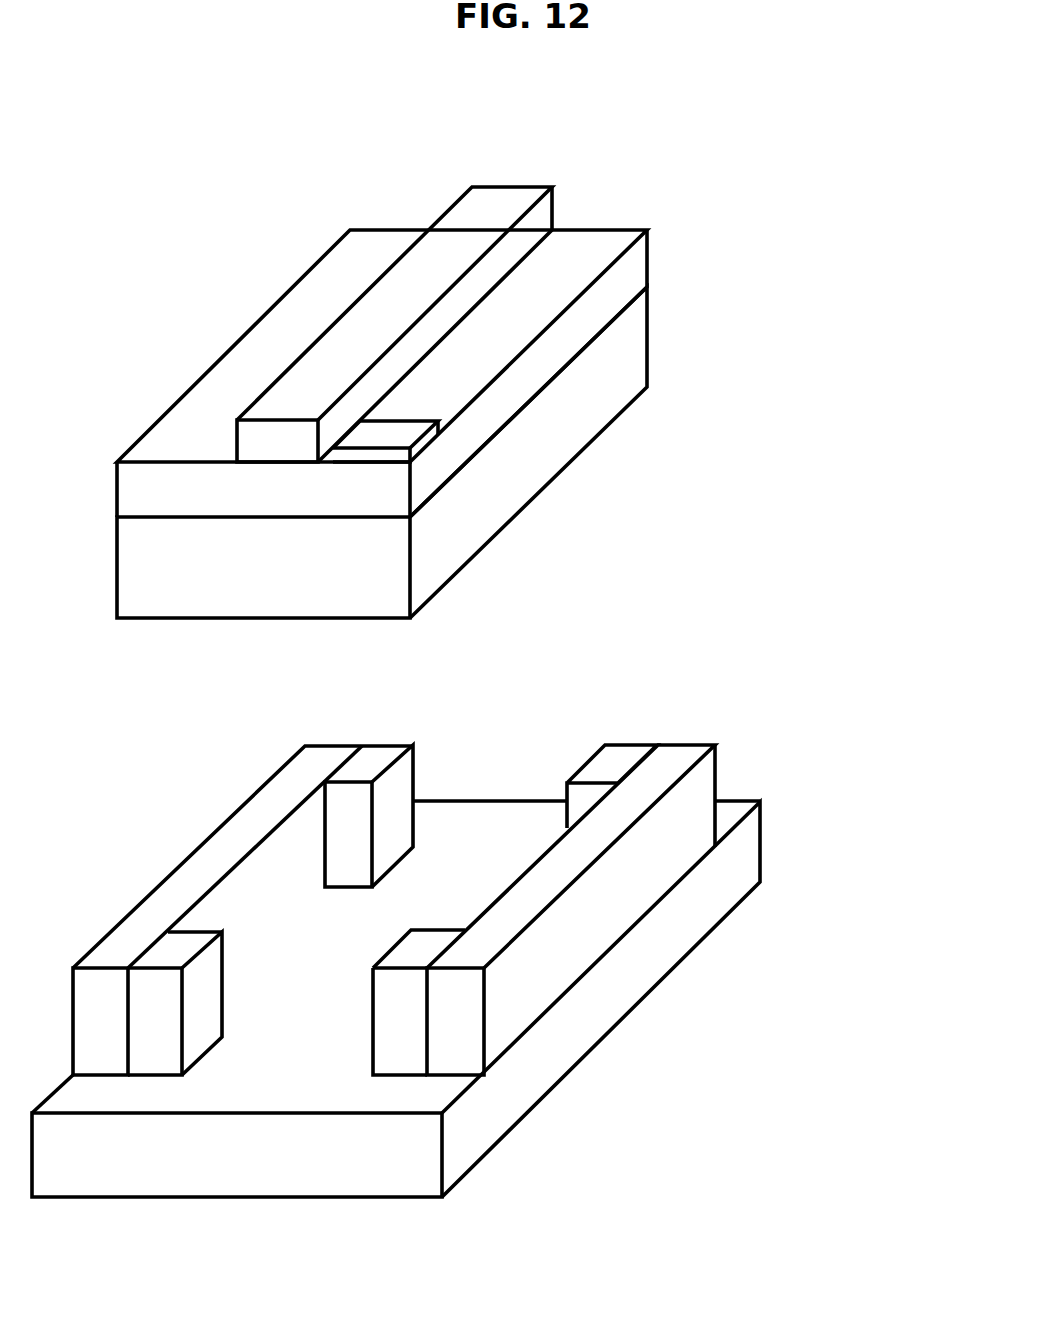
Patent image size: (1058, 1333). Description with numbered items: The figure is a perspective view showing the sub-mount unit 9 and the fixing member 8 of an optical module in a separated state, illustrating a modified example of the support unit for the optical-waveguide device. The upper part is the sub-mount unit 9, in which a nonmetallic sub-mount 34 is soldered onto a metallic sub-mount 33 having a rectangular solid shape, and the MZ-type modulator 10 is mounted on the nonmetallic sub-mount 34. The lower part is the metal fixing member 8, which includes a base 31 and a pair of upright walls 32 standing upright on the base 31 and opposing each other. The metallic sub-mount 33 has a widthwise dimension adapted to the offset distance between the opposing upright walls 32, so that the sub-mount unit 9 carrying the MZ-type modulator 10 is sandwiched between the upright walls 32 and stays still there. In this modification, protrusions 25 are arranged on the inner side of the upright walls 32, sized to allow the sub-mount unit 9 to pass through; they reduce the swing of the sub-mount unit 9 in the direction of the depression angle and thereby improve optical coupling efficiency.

The fixing member 8 is at (485, 971).
The sub-mount unit 9 is at (469, 422).
The MZ-type modulator 10 is at (518, 197).
The protrusions 25 is at (373, 757).
The base 31 is at (742, 868).
The upright walls 32 is at (698, 787).
The metallic sub-mount 33 is at (625, 322).
The nonmetallic sub-mount 34 is at (625, 267).